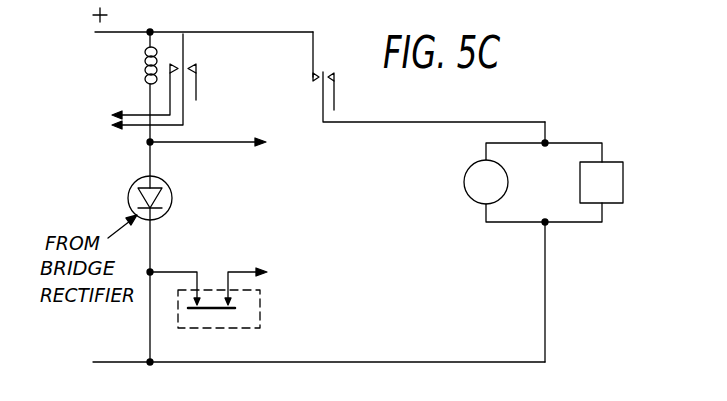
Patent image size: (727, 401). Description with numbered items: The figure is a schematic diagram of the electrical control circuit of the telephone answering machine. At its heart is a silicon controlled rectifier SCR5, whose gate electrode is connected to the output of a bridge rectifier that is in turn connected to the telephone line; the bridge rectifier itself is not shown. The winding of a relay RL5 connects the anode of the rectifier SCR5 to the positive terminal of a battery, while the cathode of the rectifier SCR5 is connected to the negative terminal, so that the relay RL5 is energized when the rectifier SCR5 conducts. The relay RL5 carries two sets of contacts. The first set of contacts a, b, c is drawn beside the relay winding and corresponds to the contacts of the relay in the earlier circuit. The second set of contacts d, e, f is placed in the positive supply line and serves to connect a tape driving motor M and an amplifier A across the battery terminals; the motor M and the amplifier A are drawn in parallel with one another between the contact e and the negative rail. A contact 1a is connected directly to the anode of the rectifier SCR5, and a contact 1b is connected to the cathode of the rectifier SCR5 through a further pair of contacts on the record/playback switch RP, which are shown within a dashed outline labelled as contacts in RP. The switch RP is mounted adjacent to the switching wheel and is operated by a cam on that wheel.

The relay RL5 is at (121, 87).
The relay contact a is at (145, 77).
The relay contact b is at (151, 81).
The relay contact c is at (195, 68).
The relay contact d is at (303, 56).
The relay contact e is at (431, 86).
The relay contact f is at (335, 80).
The contact 1a is at (222, 142).
The contact 1b is at (269, 257).
The silicon controlled rectifier SCR5 is at (116, 207).
The record/playback switch RP is at (257, 315).
The tape driving motor M is at (486, 182).
The amplifier A is at (601, 182).